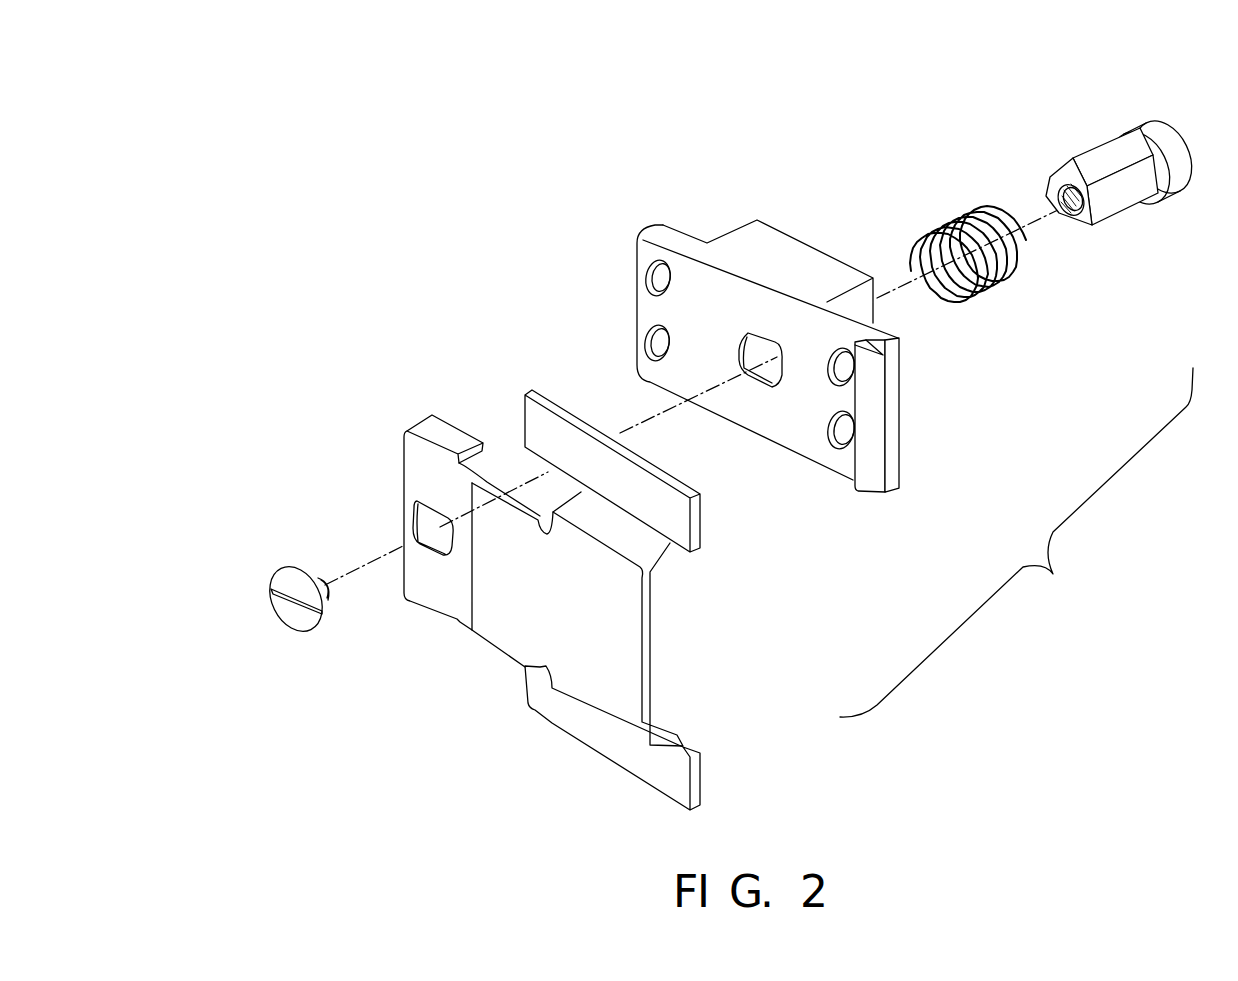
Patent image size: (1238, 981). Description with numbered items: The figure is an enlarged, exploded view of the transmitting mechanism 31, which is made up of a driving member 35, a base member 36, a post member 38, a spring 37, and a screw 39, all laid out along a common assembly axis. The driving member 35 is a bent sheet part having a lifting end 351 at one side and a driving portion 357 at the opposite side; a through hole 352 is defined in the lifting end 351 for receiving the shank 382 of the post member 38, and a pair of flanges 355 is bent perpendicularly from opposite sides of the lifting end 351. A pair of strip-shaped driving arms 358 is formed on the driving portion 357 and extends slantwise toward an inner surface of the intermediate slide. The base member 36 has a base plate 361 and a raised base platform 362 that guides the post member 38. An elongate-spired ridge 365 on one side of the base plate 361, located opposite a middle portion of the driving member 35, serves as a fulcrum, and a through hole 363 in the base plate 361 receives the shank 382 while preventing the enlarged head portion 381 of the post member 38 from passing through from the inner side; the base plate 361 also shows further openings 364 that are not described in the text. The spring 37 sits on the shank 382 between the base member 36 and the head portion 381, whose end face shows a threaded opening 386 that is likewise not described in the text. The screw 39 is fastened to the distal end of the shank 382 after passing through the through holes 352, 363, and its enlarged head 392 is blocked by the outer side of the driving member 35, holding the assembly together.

The transmitting mechanism 31 is at (1016, 542).
The driving member 35 is at (562, 600).
The lifting end 351 is at (423, 478).
The through hole 352 is at (435, 528).
The flange 355 is at (437, 431).
The driving portion 357 is at (627, 652).
The driving arm 358 is at (556, 707).
The base member 36 is at (758, 363).
The base plate 361 is at (690, 323).
The base platform 362 is at (753, 232).
The through hole 363 is at (767, 368).
The mounting holes 364 is at (645, 268).
The elongate-spired ridge 365 is at (876, 450).
The spring 37 is at (995, 317).
The post member 38 is at (1121, 203).
The head portion 381 is at (1125, 122).
The shank 382 is at (1093, 168).
The threaded hole 386 is at (1076, 254).
The screw 39 is at (243, 600).
The enlarged head 392 is at (295, 613).